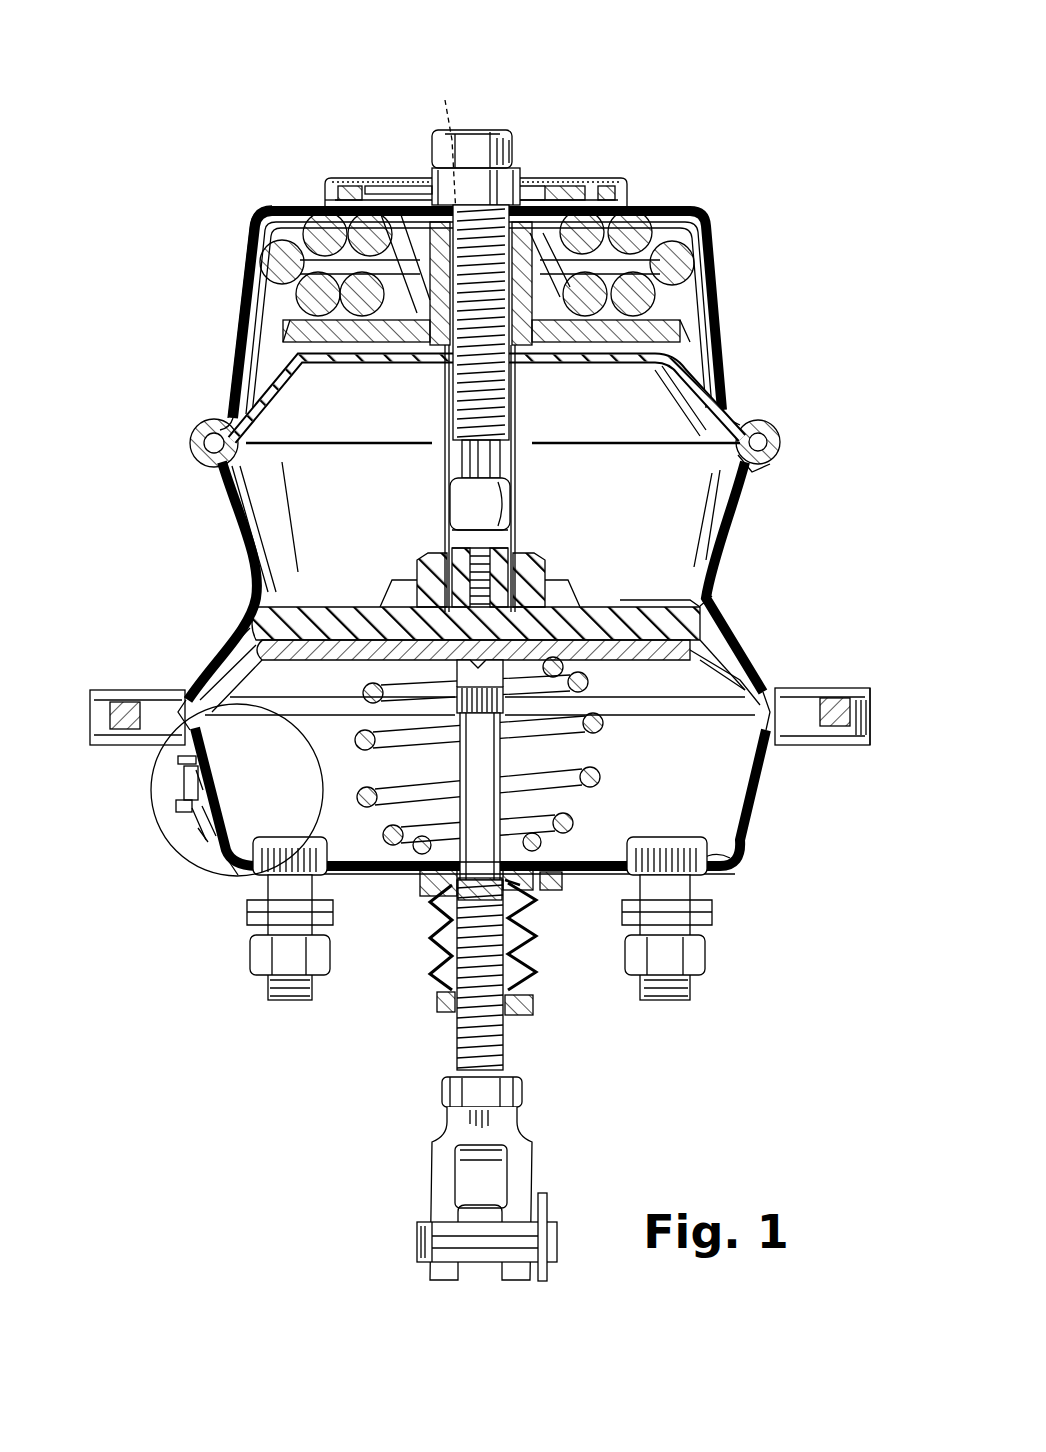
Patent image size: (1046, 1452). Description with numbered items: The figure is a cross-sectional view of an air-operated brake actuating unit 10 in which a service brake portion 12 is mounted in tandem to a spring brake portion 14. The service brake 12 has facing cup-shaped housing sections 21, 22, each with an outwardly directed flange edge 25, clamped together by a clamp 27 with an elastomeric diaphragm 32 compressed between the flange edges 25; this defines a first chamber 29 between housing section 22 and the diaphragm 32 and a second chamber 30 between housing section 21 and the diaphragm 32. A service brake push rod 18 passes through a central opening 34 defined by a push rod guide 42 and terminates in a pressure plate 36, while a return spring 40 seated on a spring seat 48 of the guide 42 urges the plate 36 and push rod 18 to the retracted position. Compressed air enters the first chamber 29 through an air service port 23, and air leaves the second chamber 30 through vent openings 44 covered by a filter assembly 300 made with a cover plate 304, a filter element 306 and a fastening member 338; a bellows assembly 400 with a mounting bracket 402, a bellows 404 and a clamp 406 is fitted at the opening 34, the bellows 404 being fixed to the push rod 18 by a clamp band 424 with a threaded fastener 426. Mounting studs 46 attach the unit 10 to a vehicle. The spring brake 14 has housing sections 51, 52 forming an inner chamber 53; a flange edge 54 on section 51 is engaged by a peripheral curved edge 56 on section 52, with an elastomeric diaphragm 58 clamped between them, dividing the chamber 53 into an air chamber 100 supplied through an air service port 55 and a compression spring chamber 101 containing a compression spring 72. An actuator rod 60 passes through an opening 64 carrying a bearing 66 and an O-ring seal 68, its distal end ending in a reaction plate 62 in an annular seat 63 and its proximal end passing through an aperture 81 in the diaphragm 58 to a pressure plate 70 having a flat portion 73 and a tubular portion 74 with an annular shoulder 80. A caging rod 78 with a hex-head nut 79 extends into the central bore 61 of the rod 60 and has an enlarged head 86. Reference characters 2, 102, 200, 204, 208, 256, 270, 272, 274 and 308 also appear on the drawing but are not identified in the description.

The lower housing wall section 2 is at (231, 872).
The brake actuating unit 10 is at (172, 418).
The service brake portion 12 is at (770, 826).
The spring brake portion 14 is at (218, 398).
The service brake push rod 18 is at (456, 1024).
The housing section 21 is at (734, 852).
The housing section 22 is at (742, 640).
The air service port 23 is at (227, 652).
The flange edge 25 is at (785, 690).
The clamp 27 is at (868, 734).
The first chamber 29 is at (714, 594).
The second chamber 30 is at (634, 816).
The elastomeric diaphragm 32 is at (735, 685).
The central opening 34 is at (527, 894).
The pressure plate 36 is at (657, 650).
The return spring 40 is at (355, 750).
The push rod guide 42 is at (437, 880).
The openings 44 is at (225, 812).
The mounting studs 46 is at (281, 1000).
The spring seat 48 is at (413, 858).
The housing section 51 is at (726, 513).
The housing section 52 is at (722, 312).
The inner chamber 53 is at (596, 422).
The flange edge 54 is at (766, 464).
The air service port 55 is at (236, 533).
The peripheral curved edge 56 is at (774, 428).
The elastomeric diaphragm 58 is at (690, 398).
The actuator rod 60 is at (520, 508).
The central bore 61 is at (508, 538).
The reaction plate 62 is at (382, 654).
The annular seat 63 is at (565, 614).
The opening 64 is at (545, 580).
The bearing 66 is at (430, 556).
The O-ring seal 68 is at (410, 572).
The pressure plate 70 is at (577, 358).
The spring brake compression spring 72 is at (690, 257).
The flat portion 73 is at (633, 347).
The tubular portion 74 is at (655, 248).
The caging rod 78 is at (505, 402).
The hex-head nut 79 is at (483, 148).
The annular shoulder 80 is at (427, 360).
The aperture 81 is at (527, 358).
The caging rod head 86 is at (500, 494).
The air chamber 100 is at (676, 508).
The compression spring chamber 101 is at (706, 316).
The seal 102 is at (565, 192).
The cover assembly 200 is at (480, 117).
The cover plate 204 is at (350, 183).
The cover seal 208 is at (394, 178).
The cover lip 256 is at (322, 196).
The sleeve 270 is at (510, 153).
The center line 272 is at (440, 144).
The washer 274 is at (520, 182).
The filter assembly 300 is at (185, 807).
The cover plate 304 is at (180, 760).
The filter element 306 is at (200, 852).
The clip body 308 is at (186, 782).
The fastening member 338 is at (178, 814).
The bellows assembly 400 is at (510, 970).
The mounting bracket 402 is at (560, 882).
The bellows 404 is at (537, 917).
The clamp 406 is at (505, 1018).
The clamp band 424 is at (440, 998).
The threaded fastener 426 is at (530, 1014).